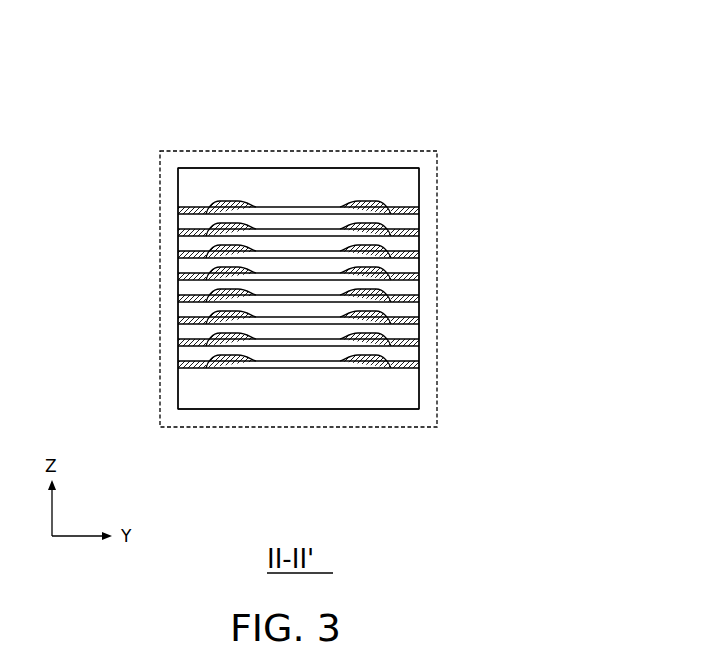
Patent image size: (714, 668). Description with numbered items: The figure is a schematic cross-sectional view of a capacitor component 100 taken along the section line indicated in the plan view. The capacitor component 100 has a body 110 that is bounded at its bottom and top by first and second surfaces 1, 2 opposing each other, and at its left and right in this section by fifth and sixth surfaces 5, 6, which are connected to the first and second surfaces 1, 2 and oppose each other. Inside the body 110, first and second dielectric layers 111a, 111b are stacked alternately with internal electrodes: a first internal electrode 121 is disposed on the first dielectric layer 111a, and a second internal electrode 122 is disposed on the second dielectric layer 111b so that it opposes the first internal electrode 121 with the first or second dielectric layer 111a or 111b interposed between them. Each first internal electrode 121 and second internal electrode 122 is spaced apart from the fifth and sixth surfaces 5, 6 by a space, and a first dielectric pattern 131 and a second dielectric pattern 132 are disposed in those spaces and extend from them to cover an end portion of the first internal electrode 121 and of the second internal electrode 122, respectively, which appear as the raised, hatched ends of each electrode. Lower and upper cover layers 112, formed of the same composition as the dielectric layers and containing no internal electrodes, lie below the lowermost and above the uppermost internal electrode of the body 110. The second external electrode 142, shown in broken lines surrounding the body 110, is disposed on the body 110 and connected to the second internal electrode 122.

The capacitor component 100 is at (297, 48).
The body 110 is at (410, 168).
The cover layer 112 is at (303, 177).
The first dielectric layer 111a is at (412, 223).
The second dielectric layer 111b is at (422, 247).
The first internal electrode 121 is at (333, 205).
The second internal electrode 122 is at (335, 233).
The first dielectric pattern 131 is at (410, 220).
The second dielectric pattern 132 is at (413, 236).
The second external electrode 142 is at (438, 168).
The first surface 1 is at (300, 416).
The second surface 2 is at (357, 146).
The fifth surface 5 is at (426, 351).
The sixth surface 6 is at (171, 353).